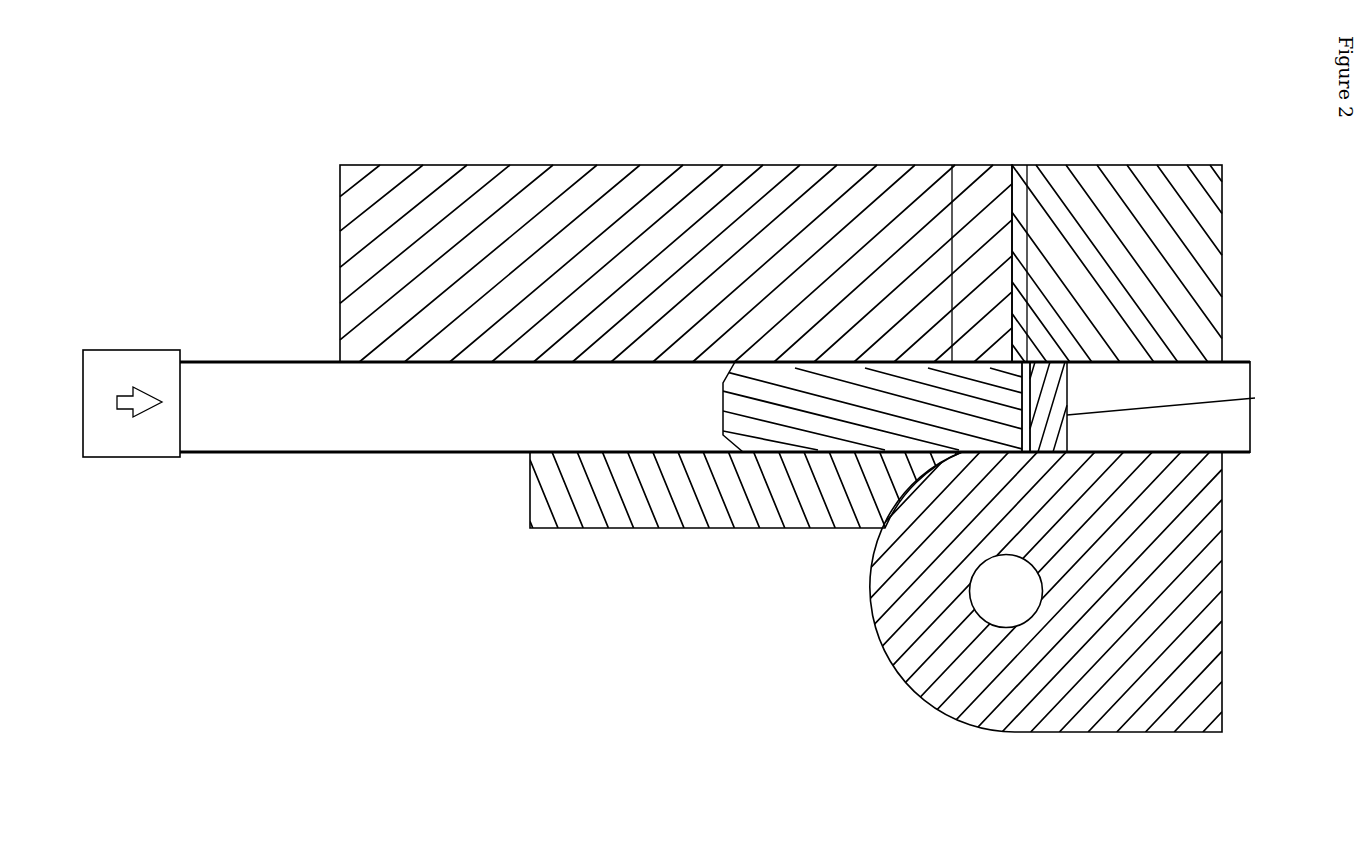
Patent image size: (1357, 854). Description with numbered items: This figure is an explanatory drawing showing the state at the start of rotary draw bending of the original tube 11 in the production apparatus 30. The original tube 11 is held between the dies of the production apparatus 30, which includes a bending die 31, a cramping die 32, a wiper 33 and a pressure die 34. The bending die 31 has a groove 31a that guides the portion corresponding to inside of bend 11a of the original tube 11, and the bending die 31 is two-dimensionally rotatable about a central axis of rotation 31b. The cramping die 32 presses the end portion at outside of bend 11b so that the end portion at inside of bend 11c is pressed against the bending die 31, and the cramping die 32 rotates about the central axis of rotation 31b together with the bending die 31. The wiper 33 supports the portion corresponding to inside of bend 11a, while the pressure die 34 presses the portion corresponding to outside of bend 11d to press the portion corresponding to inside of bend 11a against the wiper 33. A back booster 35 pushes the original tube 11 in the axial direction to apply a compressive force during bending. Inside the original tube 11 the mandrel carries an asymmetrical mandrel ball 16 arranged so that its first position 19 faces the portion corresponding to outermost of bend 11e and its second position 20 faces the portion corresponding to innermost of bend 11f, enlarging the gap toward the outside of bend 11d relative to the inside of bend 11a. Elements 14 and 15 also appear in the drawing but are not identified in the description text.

The original tube 11 is at (266, 353).
The portion corresponding to inside of bend 11a is at (883, 455).
The end portion at outside of bend 11b is at (1152, 364).
The end portion at inside of bend 11c is at (1162, 455).
The portion corresponding to outside of bend 11d is at (897, 362).
The portion corresponding to outermost of bend 11e is at (1049, 364).
The portion corresponding to innermost of bend 11f is at (893, 657).
The gap 14 is at (952, 165).
The boundary 15 is at (1027, 165).
The mandrel ball 16 is at (1178, 399).
The first position 19 is at (1040, 372).
The second position 20 is at (1052, 453).
The production apparatus 30 is at (1020, 118).
The bending die 31 is at (1193, 603).
The groove 31a is at (920, 477).
The central axis of rotation 31b is at (990, 627).
The cramping die 32 is at (1210, 278).
The wiper 33 is at (762, 517).
The pressure die 34 is at (754, 170).
The back booster 35 is at (137, 350).